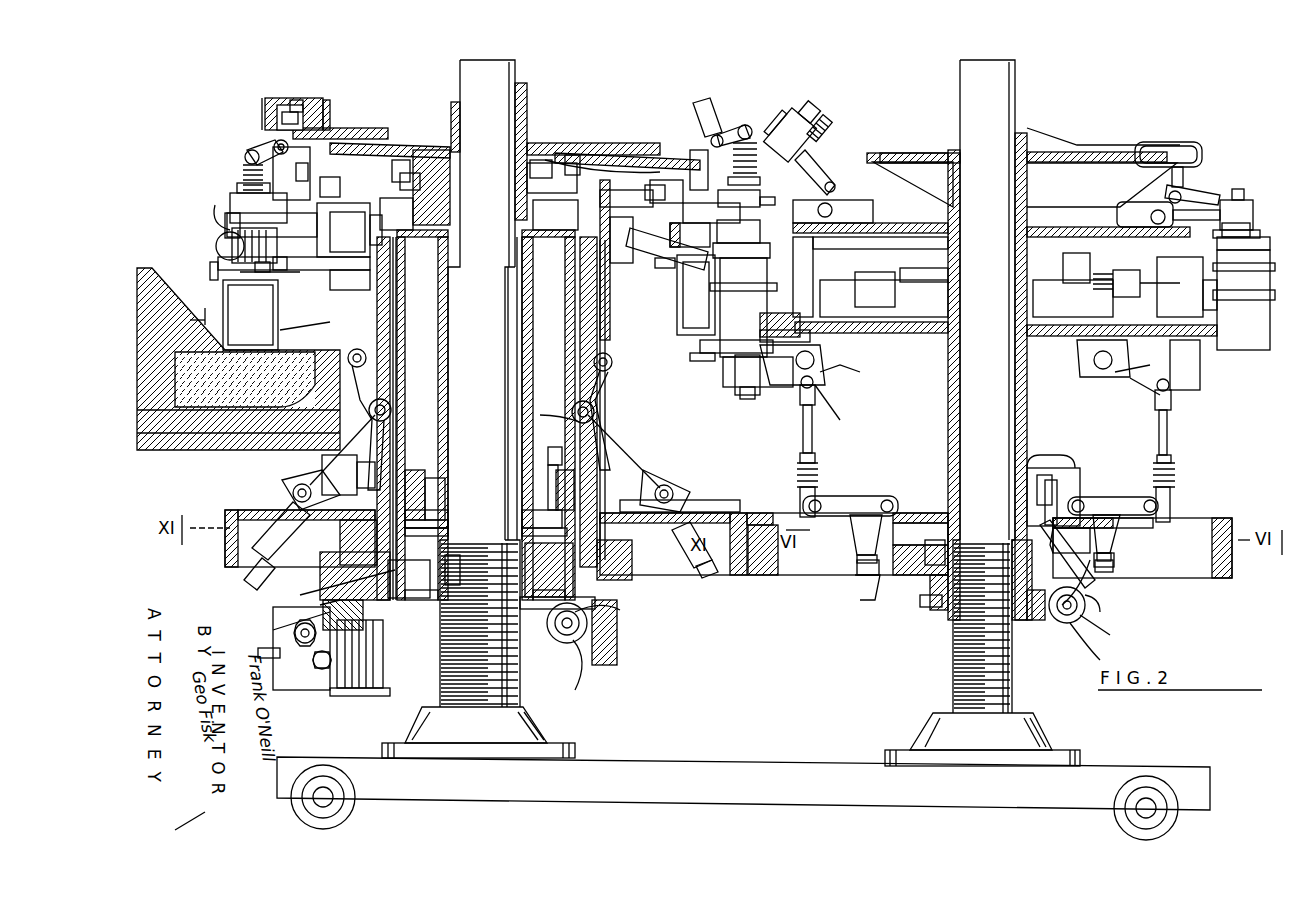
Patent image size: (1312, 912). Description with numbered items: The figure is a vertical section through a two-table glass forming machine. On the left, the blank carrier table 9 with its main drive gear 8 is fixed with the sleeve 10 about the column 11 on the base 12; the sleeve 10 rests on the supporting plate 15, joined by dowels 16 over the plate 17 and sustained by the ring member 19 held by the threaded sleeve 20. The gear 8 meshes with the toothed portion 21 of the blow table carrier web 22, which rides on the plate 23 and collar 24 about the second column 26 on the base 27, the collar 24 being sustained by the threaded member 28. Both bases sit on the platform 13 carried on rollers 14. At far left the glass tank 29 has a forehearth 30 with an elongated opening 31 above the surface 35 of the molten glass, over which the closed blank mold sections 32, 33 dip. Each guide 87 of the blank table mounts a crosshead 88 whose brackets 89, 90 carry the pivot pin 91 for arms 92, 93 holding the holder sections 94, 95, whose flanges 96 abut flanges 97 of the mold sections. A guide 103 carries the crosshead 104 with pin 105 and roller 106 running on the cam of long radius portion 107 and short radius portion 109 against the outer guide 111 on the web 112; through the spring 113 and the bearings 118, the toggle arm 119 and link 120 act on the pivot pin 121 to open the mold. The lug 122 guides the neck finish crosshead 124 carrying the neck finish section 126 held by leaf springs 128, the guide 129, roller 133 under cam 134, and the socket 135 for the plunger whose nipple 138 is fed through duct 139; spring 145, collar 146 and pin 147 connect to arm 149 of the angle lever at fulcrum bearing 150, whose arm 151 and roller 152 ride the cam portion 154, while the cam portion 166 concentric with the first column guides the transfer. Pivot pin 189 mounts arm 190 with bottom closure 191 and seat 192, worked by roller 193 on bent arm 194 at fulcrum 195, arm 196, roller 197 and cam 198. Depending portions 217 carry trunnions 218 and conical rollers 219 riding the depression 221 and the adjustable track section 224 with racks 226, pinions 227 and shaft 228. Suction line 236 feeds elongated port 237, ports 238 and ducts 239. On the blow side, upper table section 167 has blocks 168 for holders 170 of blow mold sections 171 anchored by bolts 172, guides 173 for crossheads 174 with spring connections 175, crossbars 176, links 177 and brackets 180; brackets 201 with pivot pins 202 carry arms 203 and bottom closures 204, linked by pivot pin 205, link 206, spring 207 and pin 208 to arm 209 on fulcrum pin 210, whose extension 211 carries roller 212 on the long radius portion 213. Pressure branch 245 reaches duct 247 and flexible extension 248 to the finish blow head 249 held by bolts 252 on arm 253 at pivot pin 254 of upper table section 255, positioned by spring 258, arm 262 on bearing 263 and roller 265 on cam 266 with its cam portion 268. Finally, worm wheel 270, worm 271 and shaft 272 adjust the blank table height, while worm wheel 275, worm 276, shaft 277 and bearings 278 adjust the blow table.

The main drive gear 8 is at (740, 575).
The blank carrier table 9 is at (700, 512).
The sleeve 10 is at (505, 450).
The column 11 is at (492, 623).
The base 12 is at (548, 742).
The platform 13 is at (700, 758).
The rollers 14 is at (356, 797).
The supporting plate 15 is at (453, 510).
The dowels 16 is at (448, 524).
The plate 17 is at (464, 557).
The ring member 19 is at (557, 576).
The threaded sleeve 20 is at (561, 637).
The toothed portion 21 is at (770, 578).
The blow table carrier web 22 is at (1190, 518).
The plate 23 is at (1070, 541).
The collar 24 is at (920, 540).
The second column 26 is at (1014, 658).
The base 27 is at (1038, 730).
The threaded member 28 is at (938, 615).
The glass tank 29 is at (160, 258).
The forehearth 30 is at (286, 460).
The elongated opening 31 is at (305, 330).
The blank mold main section 32 is at (329, 324).
The blank mold main section 33 is at (677, 318).
The surface of molten glass 35 is at (206, 319).
The guides 87 is at (395, 380).
The crosshead 88 is at (380, 318).
The bracket 89 is at (461, 258).
The bracket 90 is at (683, 210).
The pivot pin 91 is at (585, 281).
The arm 92 is at (668, 270).
The arm 93 is at (667, 249).
The holder section 94 is at (198, 268).
The holder section 95 is at (730, 264).
The flanges 96 is at (220, 262).
The flanges 97 is at (455, 238).
The guide 103 is at (555, 215).
The crosshead 104 is at (460, 210).
The upstanding pin 105 is at (392, 170).
The roller 106 is at (400, 180).
The long radius cam portion 107 is at (395, 148).
The short radius cam portion 109 is at (602, 170).
The outer guide 111 is at (575, 155).
The web 112 is at (600, 160).
The spring 113 is at (472, 192).
The bearings 118 is at (330, 240).
The arm 119 is at (256, 281).
The link 120 is at (269, 294).
The pivot pin 121 is at (250, 315).
The upstanding lug 122 is at (632, 260).
The neck finish crosshead 124 is at (740, 195).
The neck finish section 126 is at (226, 220).
The leaf springs 128 is at (272, 222).
The guide 129 is at (785, 78).
The roller 133 is at (745, 135).
The cam 134 is at (690, 160).
The socket 135 is at (244, 175).
The nipple 138 is at (247, 257).
The duct 139 is at (212, 200).
The spring 145 is at (246, 158).
The collar 146 is at (300, 169).
The pin 147 is at (275, 140).
The arm 149 is at (282, 95).
The fulcrum bearing 150 is at (718, 100).
The arm 151 is at (318, 116).
The roller 152 is at (305, 108).
The cam portion 154 is at (262, 100).
The cam portion 166 is at (1035, 455).
The upper table section 167 is at (910, 335).
The blocks 168 is at (815, 262).
The holder pairs 170 is at (723, 360).
The blow mold sections 171 is at (740, 392).
The bolts 172 is at (1244, 286).
The guides 173 is at (1014, 268).
The crosshead 174 is at (1003, 298).
The spring connection 175 is at (1015, 283).
The crossbar 176 is at (790, 342).
The links 177 is at (865, 284).
The brackets 180 is at (780, 312).
The pivot pin 189 is at (380, 345).
The arm 190 is at (386, 408).
The bottom closure 191 is at (297, 487).
The seat 192 is at (384, 416).
The roller 193 is at (552, 409).
The bent arm 194 is at (300, 484).
The fulcrum bearing 195 is at (283, 488).
The arm 196 is at (290, 525).
The roller 197 is at (696, 580).
The cam 198 is at (223, 296).
The brackets 201 is at (828, 378).
The pivot pins 202 is at (985, 392).
The arm 203 is at (987, 412).
The bottom closure 204 is at (993, 380).
The pivot pin 205 is at (803, 395).
The link 206 is at (814, 458).
The spring 207 is at (818, 478).
The pin 208 is at (855, 540).
The arm 209 is at (816, 561).
The fulcrum pin 210 is at (880, 496).
The angle extension 211 is at (858, 560).
The roller 212 is at (1116, 563).
The long radius cam portion 213 is at (870, 605).
The depending portions 217 is at (428, 545).
The trunnions 218 is at (322, 580).
The conical rollers 219 is at (320, 600).
The major depression portion 221 is at (373, 658).
The track section 224 is at (280, 618).
The racks 226 is at (309, 663).
The pinions 227 is at (261, 659).
The shaft 228 is at (294, 635).
The suction air line 236 is at (411, 579).
The elongated port 237 is at (458, 499).
The ports 238 is at (483, 496).
The ducts 239 is at (489, 473).
The branch 245 is at (1115, 545).
The duct 247 is at (1030, 520).
The flexible duct extension 248 is at (848, 117).
The finish blow head 249 is at (815, 125).
The bolts 252 is at (805, 115).
The arm 253 is at (810, 180).
The pivot pin 254 is at (835, 210).
The upper table section 255 is at (991, 195).
The spring 258 is at (870, 155).
The arm 262 is at (905, 165).
The bearing 263 is at (780, 197).
The roller 265 is at (1175, 142).
The cam 266 is at (1075, 136).
The cam portion 268 is at (930, 150).
The worm wheel 270 is at (600, 655).
The worm 271 is at (582, 686).
The shaft 272 is at (620, 612).
The worm wheel 275 is at (1081, 630).
The worm 276 is at (1112, 632).
The shaft 277 is at (1100, 665).
The bearings 278 is at (1055, 620).